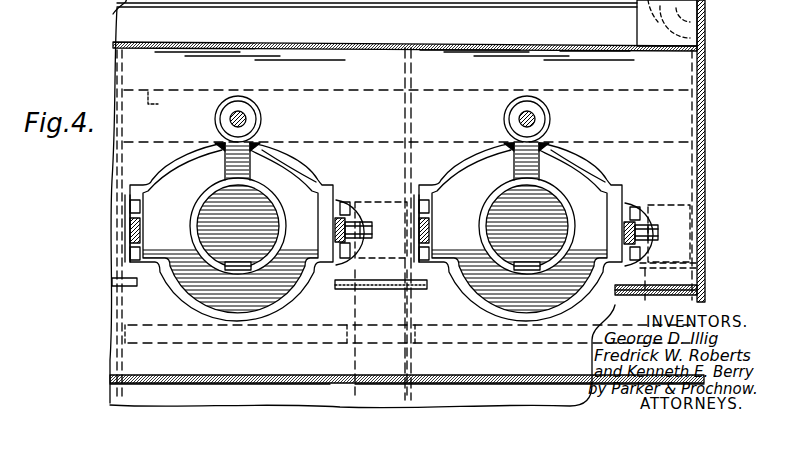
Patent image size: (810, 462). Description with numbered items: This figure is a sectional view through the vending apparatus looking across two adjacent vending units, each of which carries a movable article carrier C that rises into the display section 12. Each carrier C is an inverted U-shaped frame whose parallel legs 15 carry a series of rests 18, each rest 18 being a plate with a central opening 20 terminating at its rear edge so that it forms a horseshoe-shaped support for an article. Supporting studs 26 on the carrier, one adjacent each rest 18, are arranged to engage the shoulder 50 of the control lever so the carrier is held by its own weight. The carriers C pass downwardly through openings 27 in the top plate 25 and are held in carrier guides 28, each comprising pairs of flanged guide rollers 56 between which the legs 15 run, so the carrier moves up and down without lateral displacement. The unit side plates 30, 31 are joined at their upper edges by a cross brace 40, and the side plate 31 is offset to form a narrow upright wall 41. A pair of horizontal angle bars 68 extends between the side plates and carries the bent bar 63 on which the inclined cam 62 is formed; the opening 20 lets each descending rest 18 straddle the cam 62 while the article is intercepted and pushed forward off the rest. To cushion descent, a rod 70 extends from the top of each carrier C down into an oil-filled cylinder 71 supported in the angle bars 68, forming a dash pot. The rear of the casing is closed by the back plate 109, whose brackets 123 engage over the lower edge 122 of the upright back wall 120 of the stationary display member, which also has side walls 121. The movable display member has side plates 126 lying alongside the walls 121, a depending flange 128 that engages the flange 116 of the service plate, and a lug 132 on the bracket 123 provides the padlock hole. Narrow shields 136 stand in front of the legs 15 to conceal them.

The display section 12 is at (732, 135).
The legs 15 is at (522, 232).
The rests 18 is at (231, 232).
The central opening 20 is at (330, 263).
The top plate 25 is at (245, 189).
The supporting stud 26 is at (335, 232).
The openings 27 is at (310, 184).
The carrier guide 28 is at (342, 218).
The side plate 30 is at (357, 390).
The side plate 31 is at (694, 118).
The cross brace 40 is at (334, 331).
The narrow upright wall 41 is at (385, 282).
The shoulder 50 is at (362, 236).
The flanged guide rollers 56 is at (348, 200).
The cam 62 is at (262, 212).
The bent bar 63 is at (258, 152).
The horizontal angle bars 68 is at (166, 105).
The rod 70 is at (242, 115).
The cylinder 71 is at (226, 101).
The back plate 109 is at (116, 12).
The flange 116 is at (252, 375).
The back wall 120 is at (270, 42).
The side walls 121 is at (700, 262).
The lower edge 122 is at (470, 33).
The brackets 123 is at (640, 32).
The side plates 126 is at (706, 40).
The depending flange 128 is at (220, 393).
The lug 132 is at (692, 40).
The shields 136 is at (376, 327).
The article carrier C is at (168, 178).